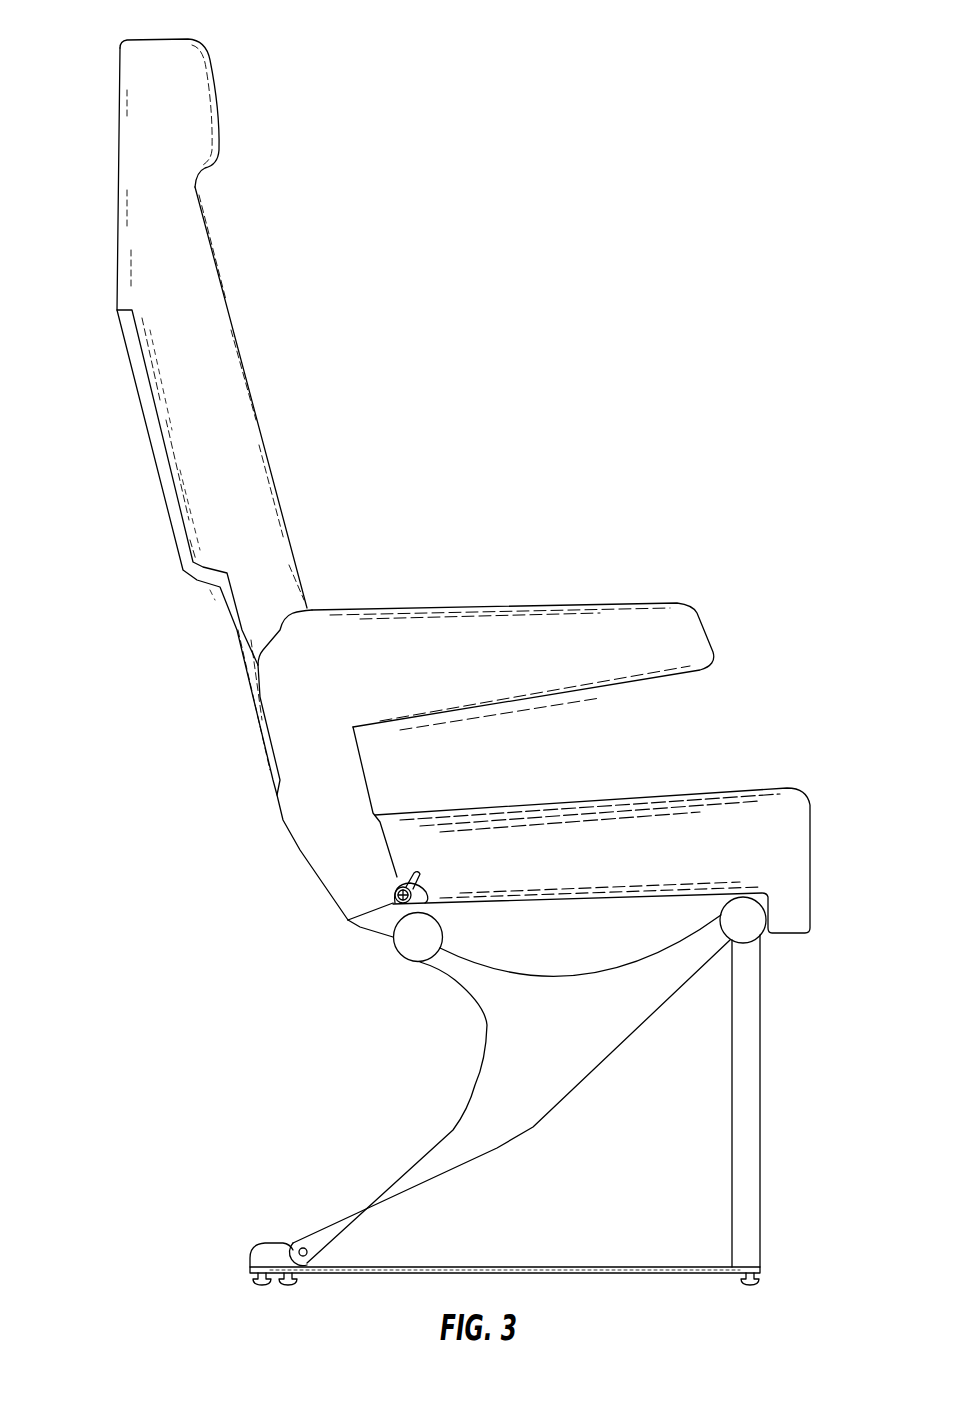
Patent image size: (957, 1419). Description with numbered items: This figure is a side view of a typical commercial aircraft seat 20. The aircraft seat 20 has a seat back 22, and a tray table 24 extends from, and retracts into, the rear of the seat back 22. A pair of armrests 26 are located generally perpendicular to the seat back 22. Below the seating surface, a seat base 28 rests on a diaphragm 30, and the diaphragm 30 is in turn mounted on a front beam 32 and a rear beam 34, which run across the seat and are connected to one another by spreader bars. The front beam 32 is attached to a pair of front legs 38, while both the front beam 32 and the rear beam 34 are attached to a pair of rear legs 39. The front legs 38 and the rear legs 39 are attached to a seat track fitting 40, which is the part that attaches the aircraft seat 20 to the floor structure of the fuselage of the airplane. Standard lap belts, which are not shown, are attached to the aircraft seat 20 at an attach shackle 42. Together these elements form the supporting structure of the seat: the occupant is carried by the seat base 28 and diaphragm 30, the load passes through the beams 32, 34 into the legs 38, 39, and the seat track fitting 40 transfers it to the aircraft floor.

The aircraft seat 20 is at (483, 250).
The seat back 22 is at (208, 48).
The tray table 24 is at (135, 382).
The armrests 26 is at (512, 656).
The seat base 28 is at (592, 844).
The diaphragm 30 is at (370, 930).
The front beam 32 is at (785, 943).
The rear beam 34 is at (403, 960).
The front legs 38 is at (782, 1101).
The rear legs 39 is at (475, 1072).
The seat track fitting 40 is at (255, 1252).
The attach shackle 42 is at (393, 892).